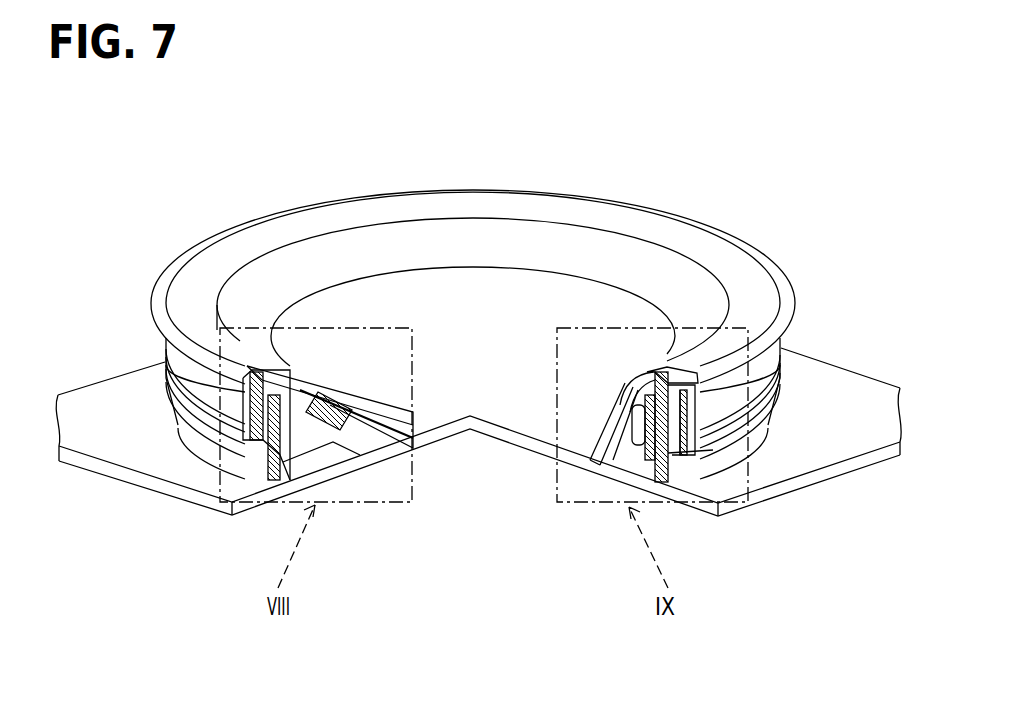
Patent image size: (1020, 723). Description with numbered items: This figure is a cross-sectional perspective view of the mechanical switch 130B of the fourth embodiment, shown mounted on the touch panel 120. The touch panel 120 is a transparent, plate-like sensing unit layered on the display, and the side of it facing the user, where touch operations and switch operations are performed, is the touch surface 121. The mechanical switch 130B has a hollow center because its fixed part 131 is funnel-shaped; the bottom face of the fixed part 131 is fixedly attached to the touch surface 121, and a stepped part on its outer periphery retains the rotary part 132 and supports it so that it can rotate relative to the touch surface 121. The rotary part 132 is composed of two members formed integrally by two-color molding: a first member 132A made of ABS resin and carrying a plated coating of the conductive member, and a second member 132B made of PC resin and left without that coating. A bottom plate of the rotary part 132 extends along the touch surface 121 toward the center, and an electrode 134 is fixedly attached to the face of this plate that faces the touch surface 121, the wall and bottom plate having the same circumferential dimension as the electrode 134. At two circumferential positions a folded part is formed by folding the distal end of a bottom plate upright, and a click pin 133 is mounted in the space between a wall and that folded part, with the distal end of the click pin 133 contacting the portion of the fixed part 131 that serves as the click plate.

The touch panel 120 is at (473, 447).
The touch surface 121 is at (129, 444).
The mechanical switch 130B is at (326, 190).
The fixed part 131 is at (283, 393).
The rotary part 132 is at (473, 265).
The first member 132A is at (473, 261).
The second member 132B is at (473, 284).
The click pin 133 is at (613, 466).
The electrode 134 is at (325, 470).